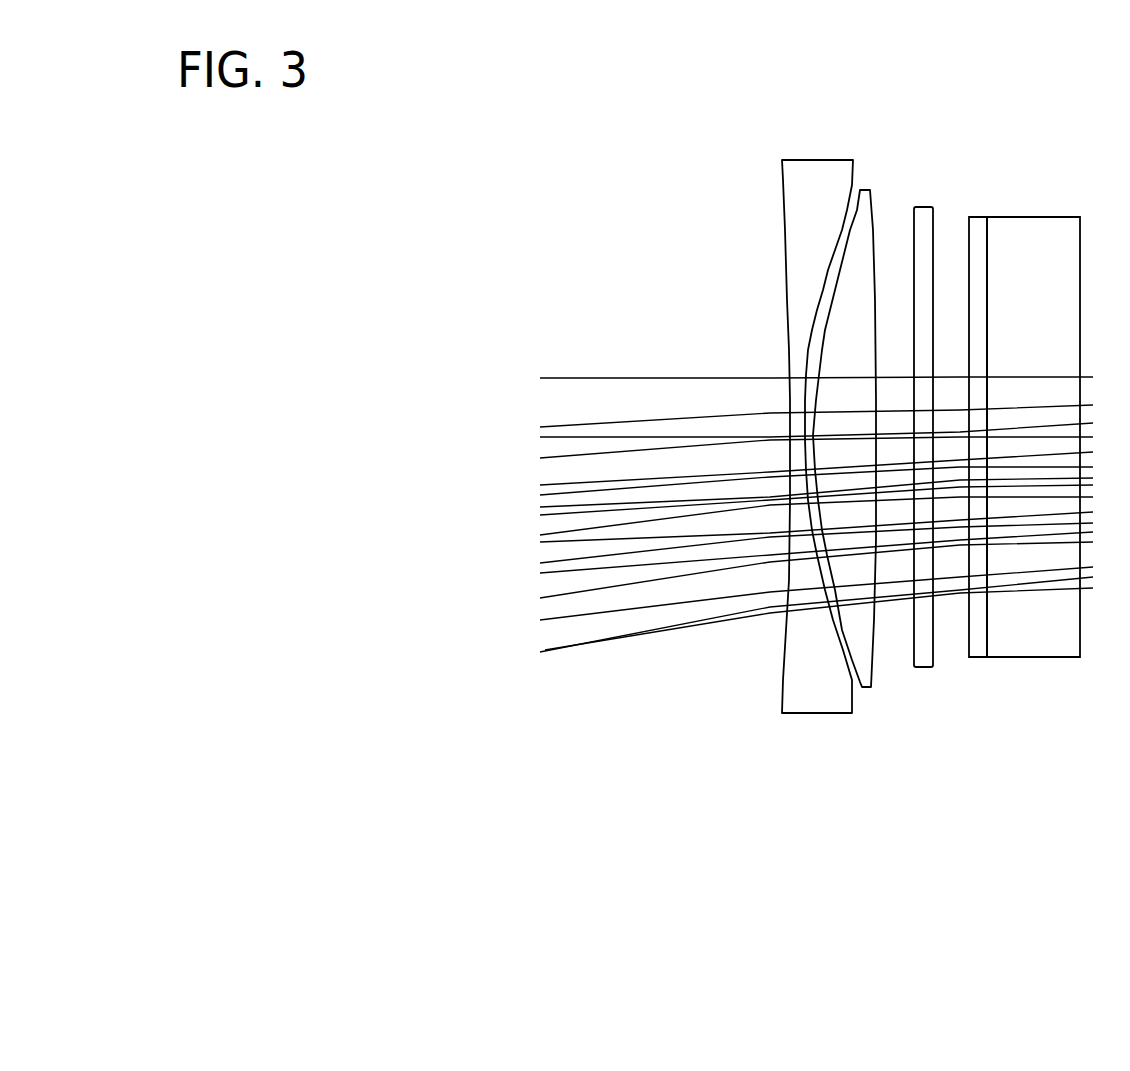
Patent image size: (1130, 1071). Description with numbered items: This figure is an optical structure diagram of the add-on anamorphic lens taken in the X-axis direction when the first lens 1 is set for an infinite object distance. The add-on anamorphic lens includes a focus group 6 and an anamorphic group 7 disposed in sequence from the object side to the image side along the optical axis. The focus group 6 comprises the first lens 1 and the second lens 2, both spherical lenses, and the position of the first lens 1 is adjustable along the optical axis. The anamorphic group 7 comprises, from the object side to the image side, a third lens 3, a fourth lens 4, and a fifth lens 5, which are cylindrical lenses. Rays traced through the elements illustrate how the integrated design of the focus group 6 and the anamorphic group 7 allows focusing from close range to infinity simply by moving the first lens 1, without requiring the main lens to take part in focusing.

The first lens 1 is at (803, 700).
The second lens 2 is at (865, 668).
The third lens 3 is at (923, 660).
The fourth lens 4 is at (977, 648).
The fifth lens 5 is at (1033, 640).
The focus group 6 is at (841, 559).
The anamorphic group 7 is at (1003, 578).